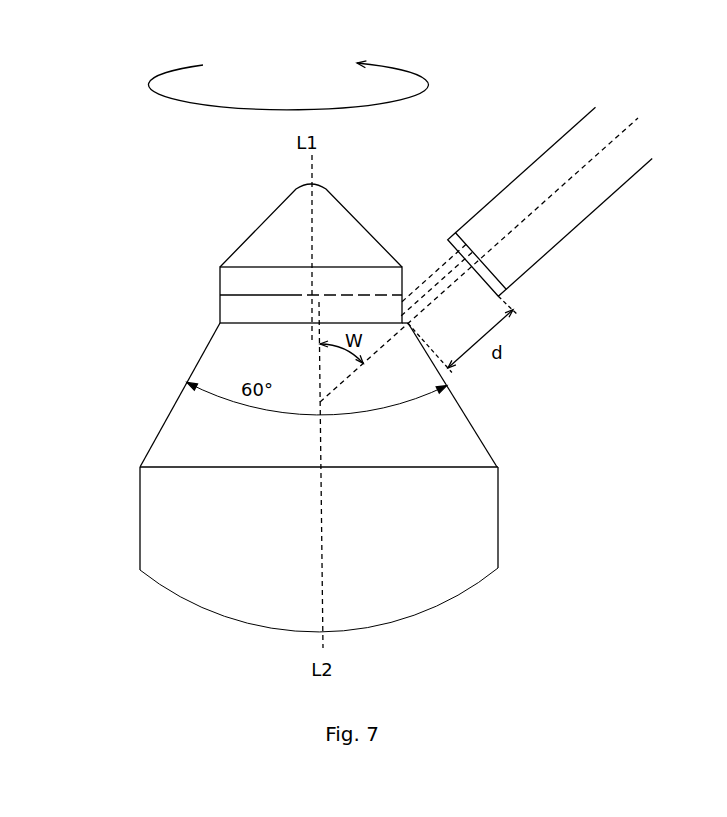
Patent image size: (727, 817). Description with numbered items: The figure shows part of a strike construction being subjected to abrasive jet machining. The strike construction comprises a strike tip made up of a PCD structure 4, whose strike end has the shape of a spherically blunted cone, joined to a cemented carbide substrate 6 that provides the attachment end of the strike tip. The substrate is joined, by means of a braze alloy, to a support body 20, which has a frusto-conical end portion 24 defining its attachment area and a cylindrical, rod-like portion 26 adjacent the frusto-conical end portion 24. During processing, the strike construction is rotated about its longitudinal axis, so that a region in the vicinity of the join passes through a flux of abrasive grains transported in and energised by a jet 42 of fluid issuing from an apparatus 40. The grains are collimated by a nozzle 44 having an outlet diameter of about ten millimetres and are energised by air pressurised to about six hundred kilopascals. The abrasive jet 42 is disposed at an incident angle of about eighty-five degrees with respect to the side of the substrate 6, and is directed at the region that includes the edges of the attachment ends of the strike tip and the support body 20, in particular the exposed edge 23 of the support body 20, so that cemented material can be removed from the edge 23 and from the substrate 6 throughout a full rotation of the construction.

The PCD structure 4 is at (260, 233).
The cemented carbide substrate 6 is at (272, 307).
The support body 20 is at (145, 363).
The exposed edge 23 is at (412, 322).
The frusto-conical end portion 24 is at (180, 433).
The cylindrical rod-like portion 26 is at (170, 500).
The abrasive jet machining apparatus 40 is at (527, 190).
The abrasive jet 42 is at (433, 292).
The nozzle 44 is at (502, 298).